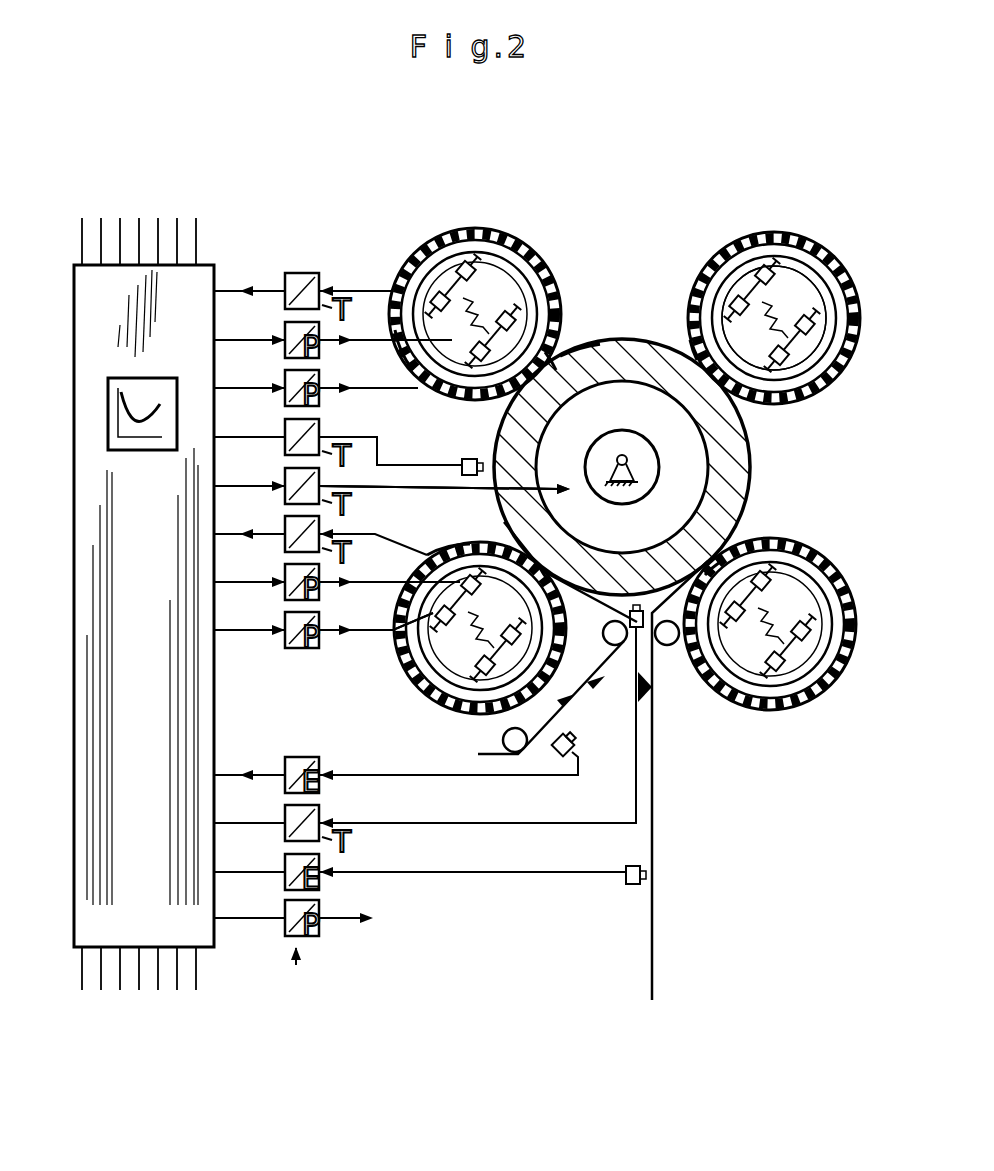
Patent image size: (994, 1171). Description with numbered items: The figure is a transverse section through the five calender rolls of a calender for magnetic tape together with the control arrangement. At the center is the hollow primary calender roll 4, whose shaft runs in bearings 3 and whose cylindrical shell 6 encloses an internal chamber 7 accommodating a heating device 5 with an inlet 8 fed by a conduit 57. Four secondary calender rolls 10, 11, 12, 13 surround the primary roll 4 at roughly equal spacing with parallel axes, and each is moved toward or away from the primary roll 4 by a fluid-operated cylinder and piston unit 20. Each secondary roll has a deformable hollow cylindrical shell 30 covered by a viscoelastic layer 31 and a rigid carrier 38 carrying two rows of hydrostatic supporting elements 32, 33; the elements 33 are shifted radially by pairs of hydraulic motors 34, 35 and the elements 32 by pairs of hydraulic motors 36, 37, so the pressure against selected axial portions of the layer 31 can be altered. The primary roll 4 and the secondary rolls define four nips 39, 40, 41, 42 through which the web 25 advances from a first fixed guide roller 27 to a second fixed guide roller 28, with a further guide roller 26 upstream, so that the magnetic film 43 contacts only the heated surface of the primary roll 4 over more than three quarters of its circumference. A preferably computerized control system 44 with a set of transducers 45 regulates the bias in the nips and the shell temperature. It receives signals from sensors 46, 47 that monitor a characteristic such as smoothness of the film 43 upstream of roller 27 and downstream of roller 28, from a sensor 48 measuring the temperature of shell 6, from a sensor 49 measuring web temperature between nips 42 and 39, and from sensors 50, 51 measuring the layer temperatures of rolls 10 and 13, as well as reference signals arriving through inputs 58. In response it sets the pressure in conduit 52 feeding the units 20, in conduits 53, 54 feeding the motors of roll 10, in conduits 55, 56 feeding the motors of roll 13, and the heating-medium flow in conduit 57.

The bearings 3 is at (628, 483).
The primary calender roll 4 is at (643, 467).
The heating device 5 is at (690, 452).
The cylindrical shell 6 is at (588, 368).
The internal chamber 7 is at (680, 507).
The inlet 8 is at (520, 492).
The secondary calender roll 10 is at (448, 306).
The secondary calender roll 11 is at (774, 291).
The secondary calender roll 12 is at (773, 722).
The secondary calender roll 13 is at (388, 672).
The cylinder and piston unit 20 is at (757, 318).
The web 25 is at (655, 842).
The guide roller 26 is at (503, 738).
The first fixed guide roller 27 is at (606, 641).
The second fixed guide roller 28 is at (668, 646).
The deformable hollow cylindrical shell 30 is at (431, 242).
The viscoelastic layer 31 is at (490, 252).
The hydrostatic supporting elements 32 is at (484, 392).
The hydrostatic supporting elements 33 is at (434, 287).
The hydraulic motor 34 is at (391, 288).
The hydraulic motor 35 is at (478, 266).
The hydraulic motor 36 is at (512, 312).
The hydraulic motor 37 is at (460, 388).
The rigid carrier 38 is at (423, 378).
The nip 39 is at (566, 343).
The nip 40 is at (682, 336).
The nip 41 is at (748, 534).
The nip 42 is at (560, 600).
The magnetic film 43 is at (603, 690).
The control system 44 is at (120, 658).
The transducers 45 is at (293, 980).
The sensor 46 is at (561, 762).
The sensor 47 is at (633, 893).
The sensor 48 is at (615, 650).
The sensor 49 is at (462, 465).
The sensor 50 is at (391, 289).
The sensor 51 is at (431, 555).
The conduit 52 is at (340, 920).
The conduit 53 is at (370, 338).
The conduit 54 is at (370, 386).
The conduit 55 is at (370, 580).
The conduit 56 is at (370, 628).
The conduit 57 is at (378, 489).
The inputs 58 is at (154, 200).